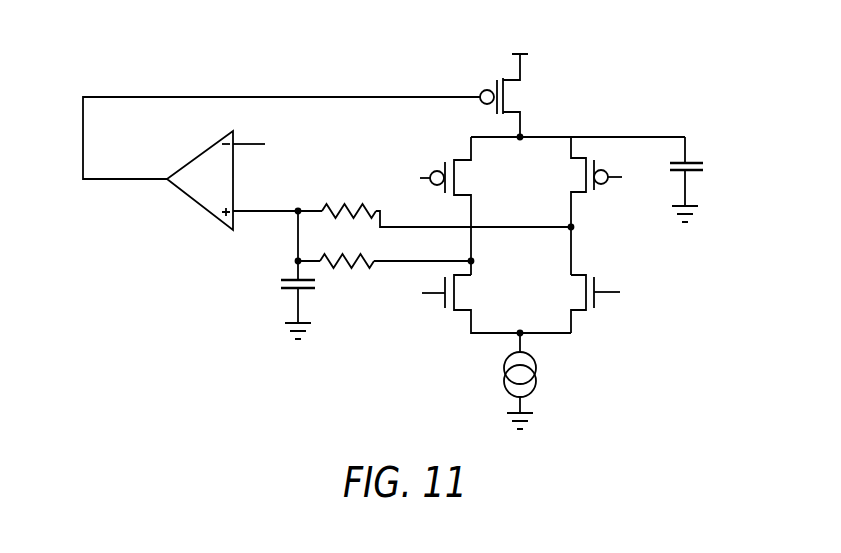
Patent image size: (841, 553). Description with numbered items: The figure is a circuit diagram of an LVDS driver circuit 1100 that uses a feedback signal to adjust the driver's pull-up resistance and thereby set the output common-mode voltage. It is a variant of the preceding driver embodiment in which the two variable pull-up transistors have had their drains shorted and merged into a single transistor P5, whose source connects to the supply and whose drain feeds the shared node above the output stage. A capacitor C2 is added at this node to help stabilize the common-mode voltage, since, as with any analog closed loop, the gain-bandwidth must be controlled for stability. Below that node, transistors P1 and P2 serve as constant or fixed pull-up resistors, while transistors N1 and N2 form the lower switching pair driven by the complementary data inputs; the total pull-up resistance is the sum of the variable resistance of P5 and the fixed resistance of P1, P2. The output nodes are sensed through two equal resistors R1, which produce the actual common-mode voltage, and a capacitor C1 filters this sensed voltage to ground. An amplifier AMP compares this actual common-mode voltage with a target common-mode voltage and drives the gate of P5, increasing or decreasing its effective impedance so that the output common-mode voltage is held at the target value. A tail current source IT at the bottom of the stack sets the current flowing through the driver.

The common-mode feedback amplifier circuit 1100 is at (156, 79).
The transistor P5 is at (513, 95).
The transistor P1 is at (458, 206).
The transistor P2 is at (585, 206).
The NMOS input transistor N1 is at (496, 304).
The NMOS input transistor N2 is at (584, 304).
The resistor R1 is at (348, 225).
The capacitor C1 is at (284, 307).
The capacitor C2 is at (703, 179).
The amplifier AMP is at (200, 152).
The tail current source IT is at (547, 410).